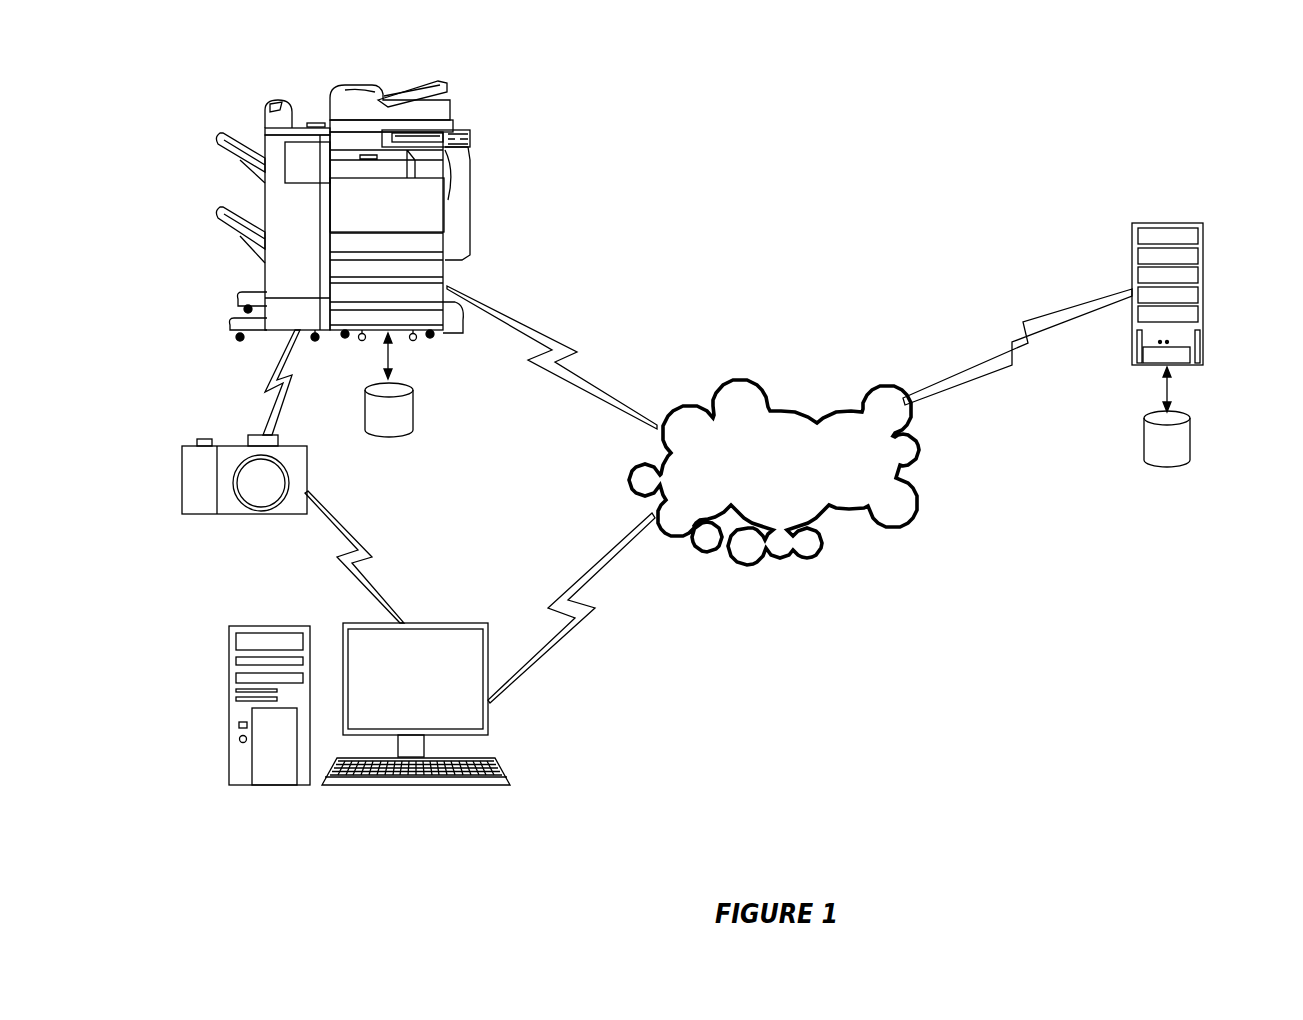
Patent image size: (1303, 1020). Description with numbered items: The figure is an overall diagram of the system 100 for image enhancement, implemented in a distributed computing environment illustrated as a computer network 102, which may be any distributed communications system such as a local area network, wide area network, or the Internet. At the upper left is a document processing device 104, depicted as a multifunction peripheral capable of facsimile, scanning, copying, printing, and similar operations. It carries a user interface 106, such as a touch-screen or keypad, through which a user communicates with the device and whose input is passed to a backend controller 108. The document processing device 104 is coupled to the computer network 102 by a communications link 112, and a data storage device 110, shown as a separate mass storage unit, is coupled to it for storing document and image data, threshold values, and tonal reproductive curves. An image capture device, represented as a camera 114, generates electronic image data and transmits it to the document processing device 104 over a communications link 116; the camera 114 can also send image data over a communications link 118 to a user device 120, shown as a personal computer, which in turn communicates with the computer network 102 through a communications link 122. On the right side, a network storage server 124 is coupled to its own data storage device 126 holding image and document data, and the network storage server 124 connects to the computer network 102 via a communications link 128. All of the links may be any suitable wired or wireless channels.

The system 100 is at (981, 82).
The computer network 102 is at (851, 352).
The document processing device 104 is at (367, 199).
The user interface 106 is at (468, 134).
The controller 108 is at (438, 213).
The data storage device 110 is at (414, 388).
The communications link 112 is at (568, 346).
The camera 114 is at (189, 446).
The communications link 116 is at (266, 384).
The communications link 118 is at (365, 548).
The user device 120 is at (283, 625).
The communications link 122 is at (558, 601).
The network storage server 124 is at (1203, 223).
The data storage device 126 is at (1190, 418).
The communications link 128 is at (1020, 321).